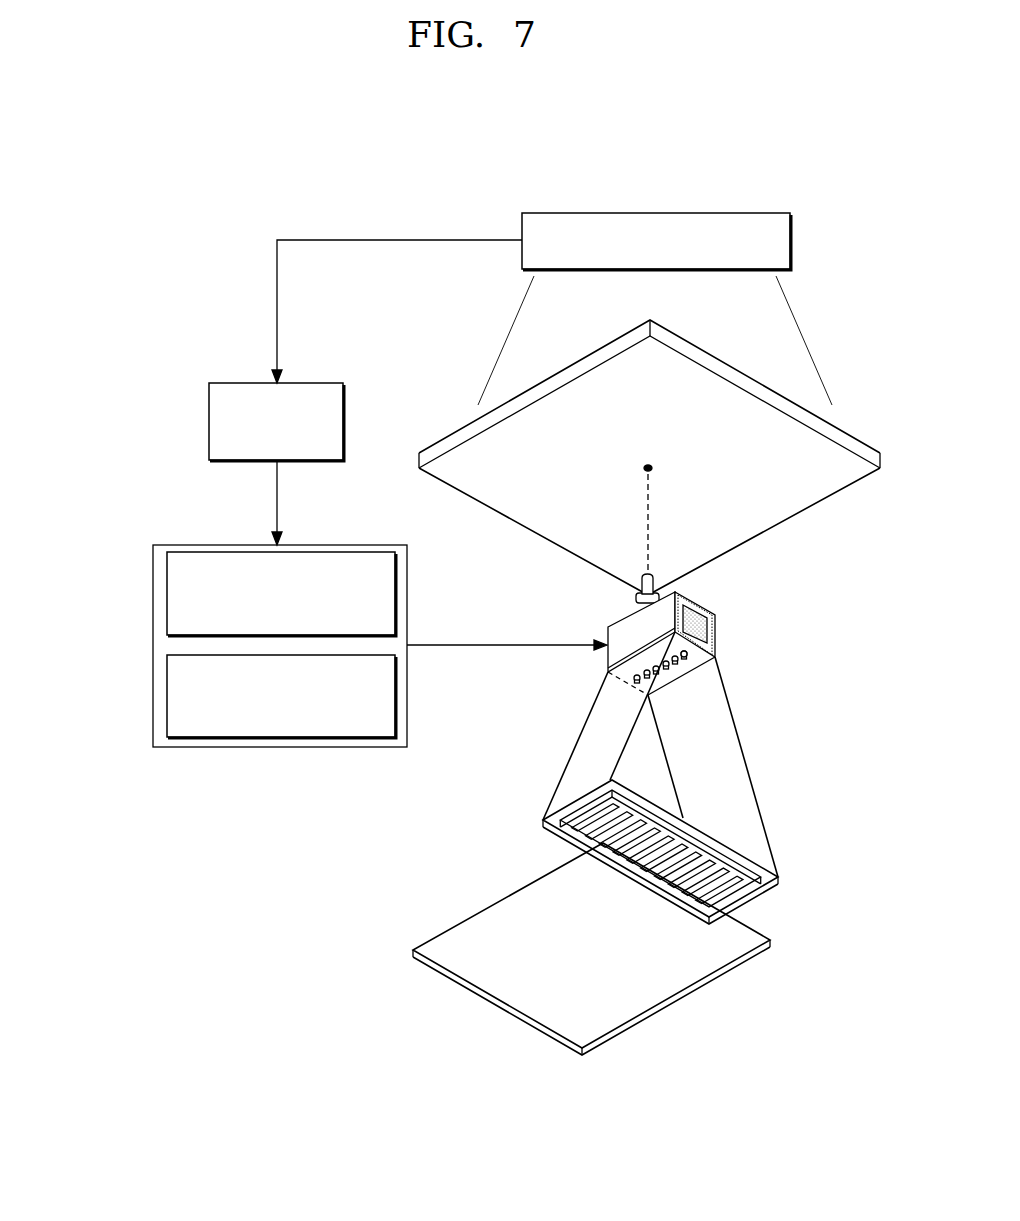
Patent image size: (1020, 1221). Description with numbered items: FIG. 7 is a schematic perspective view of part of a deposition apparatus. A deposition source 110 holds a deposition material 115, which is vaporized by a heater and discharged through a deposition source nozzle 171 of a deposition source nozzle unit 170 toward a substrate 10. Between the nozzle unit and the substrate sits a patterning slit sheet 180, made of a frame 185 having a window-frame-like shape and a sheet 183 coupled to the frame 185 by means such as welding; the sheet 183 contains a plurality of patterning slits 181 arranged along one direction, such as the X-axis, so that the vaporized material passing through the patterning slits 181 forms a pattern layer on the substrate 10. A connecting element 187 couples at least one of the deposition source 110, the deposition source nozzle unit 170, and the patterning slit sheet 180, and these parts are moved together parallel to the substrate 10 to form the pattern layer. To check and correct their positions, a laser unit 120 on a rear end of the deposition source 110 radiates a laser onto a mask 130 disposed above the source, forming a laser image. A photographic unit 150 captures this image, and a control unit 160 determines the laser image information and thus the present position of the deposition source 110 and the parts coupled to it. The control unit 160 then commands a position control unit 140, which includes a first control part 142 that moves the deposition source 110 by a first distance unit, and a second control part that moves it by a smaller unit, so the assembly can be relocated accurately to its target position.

The substrate 10 is at (473, 935).
The deposition source 110 is at (622, 632).
The deposition material 115 is at (713, 624).
The laser unit 120 is at (643, 598).
The mask 130 is at (763, 500).
The position control unit 140 is at (80, 600).
The first control part 142 is at (167, 604).
The photographic unit 150 is at (656, 213).
The control unit 160 is at (209, 420).
The deposition source nozzle unit 170 is at (700, 655).
The deposition source nozzle 171 is at (690, 653).
The patterning slit sheet 180 is at (669, 878).
The patterning slits 181 is at (778, 877).
The sheet 183 is at (730, 890).
The frame 185 is at (545, 818).
The connecting element 187 is at (738, 763).